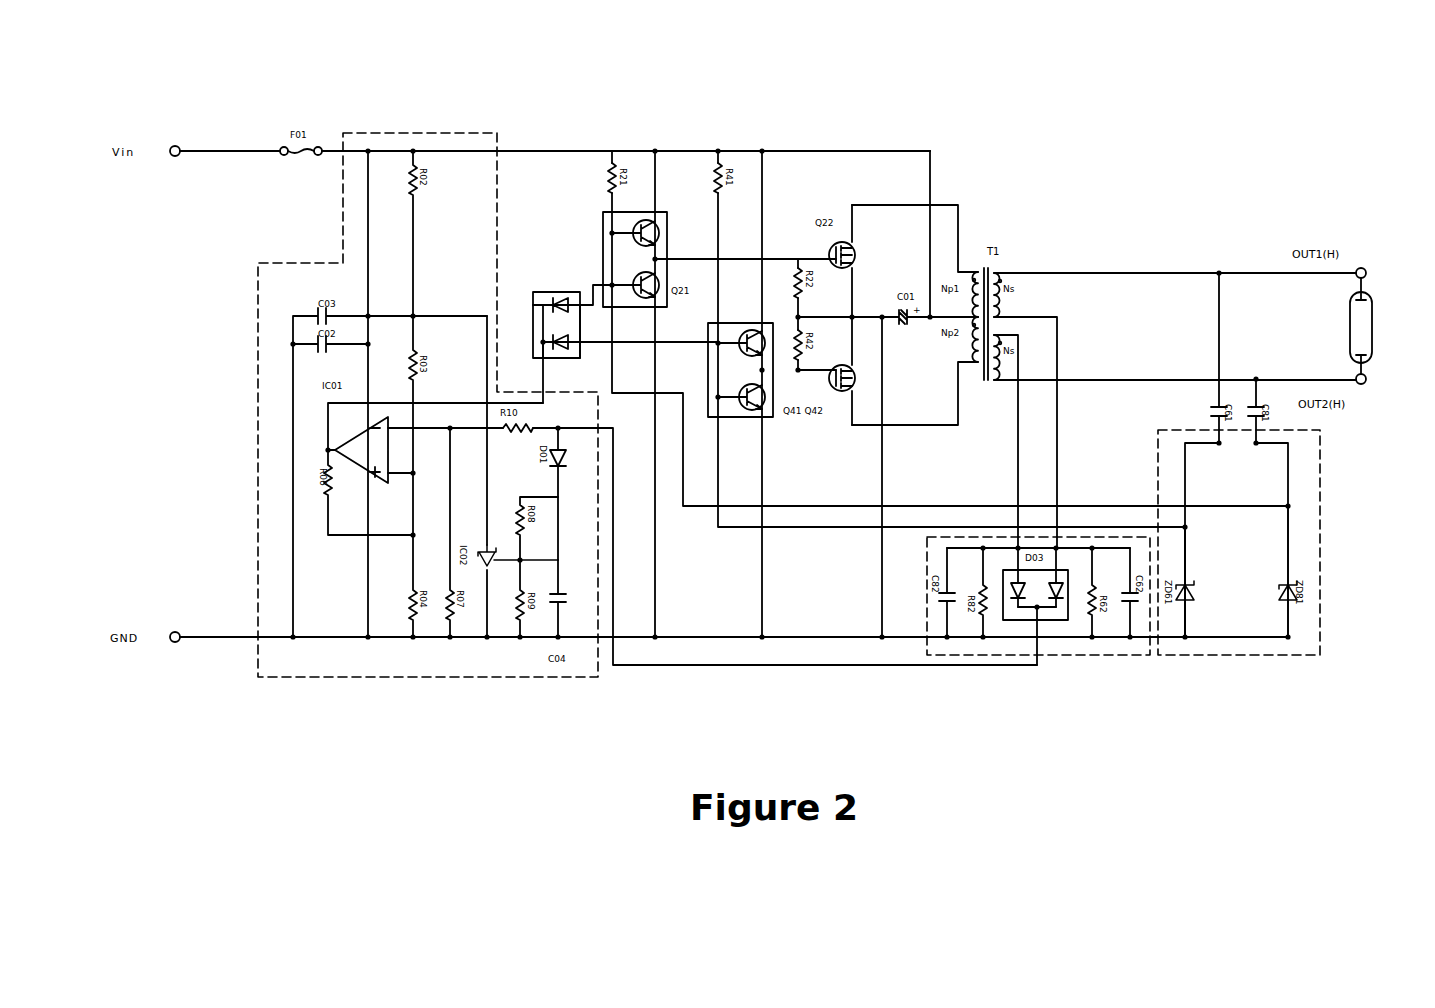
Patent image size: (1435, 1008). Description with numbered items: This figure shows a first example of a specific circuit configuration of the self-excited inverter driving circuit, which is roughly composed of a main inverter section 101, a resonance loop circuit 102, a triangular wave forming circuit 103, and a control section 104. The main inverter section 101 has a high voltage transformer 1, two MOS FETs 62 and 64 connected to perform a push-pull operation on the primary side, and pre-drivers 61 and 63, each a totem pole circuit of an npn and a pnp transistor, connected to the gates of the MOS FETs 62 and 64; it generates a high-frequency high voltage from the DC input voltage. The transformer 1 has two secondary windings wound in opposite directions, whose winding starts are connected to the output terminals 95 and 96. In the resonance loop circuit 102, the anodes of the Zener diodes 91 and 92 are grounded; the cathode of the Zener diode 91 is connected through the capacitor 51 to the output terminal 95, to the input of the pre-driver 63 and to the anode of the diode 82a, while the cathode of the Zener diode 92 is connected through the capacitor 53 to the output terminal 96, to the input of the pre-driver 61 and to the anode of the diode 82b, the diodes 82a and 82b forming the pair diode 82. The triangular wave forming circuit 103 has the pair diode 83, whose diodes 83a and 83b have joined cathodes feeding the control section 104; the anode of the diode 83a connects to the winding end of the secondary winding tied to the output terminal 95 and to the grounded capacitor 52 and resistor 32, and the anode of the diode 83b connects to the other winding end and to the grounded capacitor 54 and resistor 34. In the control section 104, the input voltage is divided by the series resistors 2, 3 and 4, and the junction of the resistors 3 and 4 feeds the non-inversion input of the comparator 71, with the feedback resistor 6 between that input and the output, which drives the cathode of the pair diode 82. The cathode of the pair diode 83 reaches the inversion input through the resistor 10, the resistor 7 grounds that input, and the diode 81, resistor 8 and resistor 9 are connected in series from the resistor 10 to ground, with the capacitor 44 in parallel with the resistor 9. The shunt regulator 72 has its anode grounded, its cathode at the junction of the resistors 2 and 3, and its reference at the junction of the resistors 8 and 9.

The main inverter section 101 is at (968, 165).
The control section 104 is at (258, 328).
The high voltage transformer 1 is at (985, 378).
The resistor 2 is at (413, 181).
The resistor 3 is at (412, 364).
The resistor 4 is at (413, 600).
The feedback resistor 6 is at (329, 480).
The resistor 7 is at (450, 596).
The resistor 8 is at (520, 525).
The resistor 9 is at (520, 616).
The resistor 10 is at (533, 431).
The comparator 71 is at (388, 484).
The shunt regulator 72 is at (486, 553).
The diode 81 is at (566, 466).
The capacitor 44 is at (562, 600).
The pair diode 82 is at (606, 319).
The diode 82a is at (571, 296).
The diode 82b is at (558, 348).
The pre-driver 61 is at (603, 223).
The pre-driver 63 is at (731, 418).
The MOS FET 62 is at (853, 254).
The MOS FET 64 is at (855, 385).
The capacitor 51 is at (1207, 415).
The capacitor 53 is at (1244, 397).
The capacitor 52 is at (1129, 579).
The capacitor 54 is at (939, 598).
The resistor 34 is at (983, 603).
The resistor 32 is at (1090, 621).
The pair diode 83 is at (1031, 590).
The diode 83a is at (1061, 578).
The diode 83b is at (1009, 572).
The Zener diode 91 is at (1192, 595).
The Zener diode 92 is at (1280, 598).
The output terminal 95 is at (1366, 273).
The output terminal 96 is at (1366, 378).
The resonance loop circuit 102 is at (1232, 658).
The triangular wave forming circuit 103 is at (1150, 655).